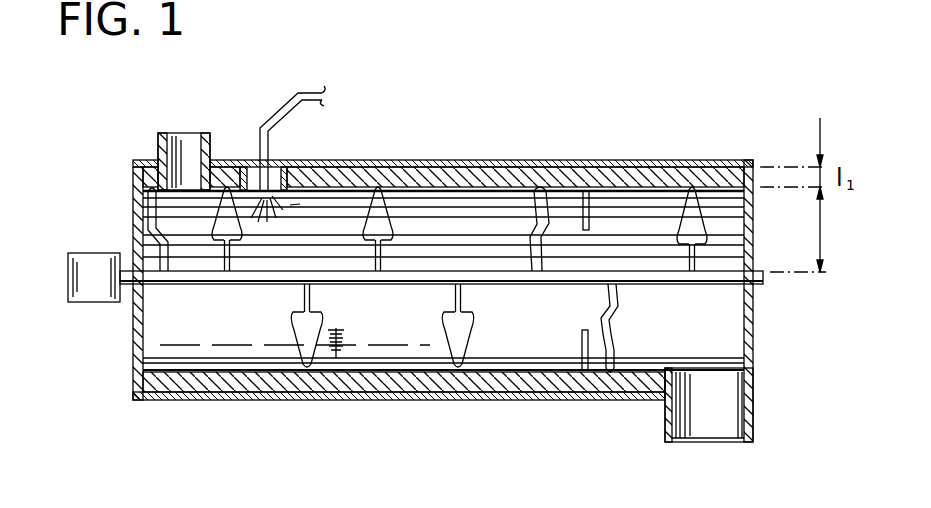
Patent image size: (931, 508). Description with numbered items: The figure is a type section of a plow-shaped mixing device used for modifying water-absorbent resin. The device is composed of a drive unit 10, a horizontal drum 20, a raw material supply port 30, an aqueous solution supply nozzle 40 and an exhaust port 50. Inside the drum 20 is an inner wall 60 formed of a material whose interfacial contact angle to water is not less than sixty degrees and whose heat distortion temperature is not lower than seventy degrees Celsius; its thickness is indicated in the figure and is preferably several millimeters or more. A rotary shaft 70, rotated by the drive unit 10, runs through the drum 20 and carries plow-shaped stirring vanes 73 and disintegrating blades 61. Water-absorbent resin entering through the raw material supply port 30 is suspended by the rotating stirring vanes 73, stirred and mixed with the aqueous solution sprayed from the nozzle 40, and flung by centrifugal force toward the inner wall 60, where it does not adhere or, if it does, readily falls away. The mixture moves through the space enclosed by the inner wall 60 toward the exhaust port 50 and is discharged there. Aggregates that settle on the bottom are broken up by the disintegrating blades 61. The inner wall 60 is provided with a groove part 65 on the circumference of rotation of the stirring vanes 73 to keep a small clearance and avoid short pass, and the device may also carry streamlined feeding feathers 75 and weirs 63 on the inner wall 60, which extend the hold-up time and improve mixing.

The drive unit 10 is at (97, 303).
The horizontal drum 20 is at (494, 160).
The raw material supply port 30 is at (184, 133).
The aqueous solution supply nozzle 40 is at (330, 95).
The exhaust port 50 is at (707, 435).
The inner wall 60 is at (664, 182).
The disintegrating blades 61 is at (340, 358).
The weirs 63 is at (588, 190).
The groove part 65 is at (388, 187).
The rotary shaft 70 is at (258, 286).
The plow-shaped stirring vanes 73 is at (458, 372).
The feeding feathers 75 is at (610, 372).